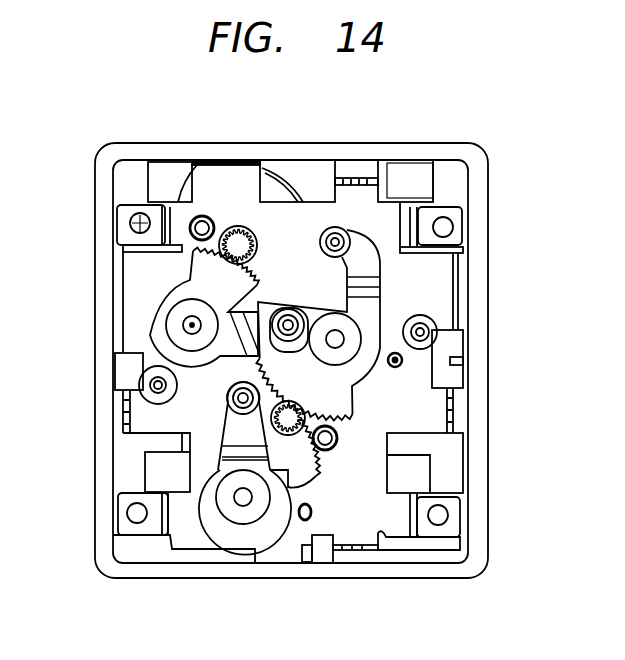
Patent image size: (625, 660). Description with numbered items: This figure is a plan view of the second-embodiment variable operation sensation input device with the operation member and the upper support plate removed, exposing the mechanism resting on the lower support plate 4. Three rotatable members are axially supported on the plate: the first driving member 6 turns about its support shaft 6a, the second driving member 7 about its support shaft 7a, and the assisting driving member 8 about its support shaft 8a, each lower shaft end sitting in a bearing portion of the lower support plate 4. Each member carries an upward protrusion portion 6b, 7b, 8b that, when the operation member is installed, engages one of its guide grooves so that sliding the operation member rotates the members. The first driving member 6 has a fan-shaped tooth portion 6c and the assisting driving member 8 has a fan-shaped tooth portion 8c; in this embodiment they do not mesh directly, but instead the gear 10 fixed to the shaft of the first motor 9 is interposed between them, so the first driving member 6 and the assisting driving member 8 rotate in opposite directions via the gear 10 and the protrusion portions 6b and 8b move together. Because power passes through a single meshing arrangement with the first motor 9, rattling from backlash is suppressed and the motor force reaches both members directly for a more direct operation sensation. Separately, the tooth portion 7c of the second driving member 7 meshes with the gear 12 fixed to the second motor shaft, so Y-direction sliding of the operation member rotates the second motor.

The lower support plate 4 is at (458, 258).
The first driving member 6 is at (383, 310).
The support shaft 6a is at (337, 339).
The protrusion portion 6b is at (346, 230).
The tooth portion 6c is at (356, 423).
The second driving member 7 is at (152, 300).
The support shaft 7a is at (183, 326).
The protrusion portion 7b is at (287, 309).
The tooth portion 7c is at (193, 232).
The assisting driving member 8 is at (201, 516).
The support shaft 8a is at (243, 505).
The protrusion portion 8b is at (228, 398).
The tooth portion 8c is at (323, 465).
The first motor 9 is at (425, 463).
The gear 10 is at (337, 442).
The gear 12 is at (238, 244).